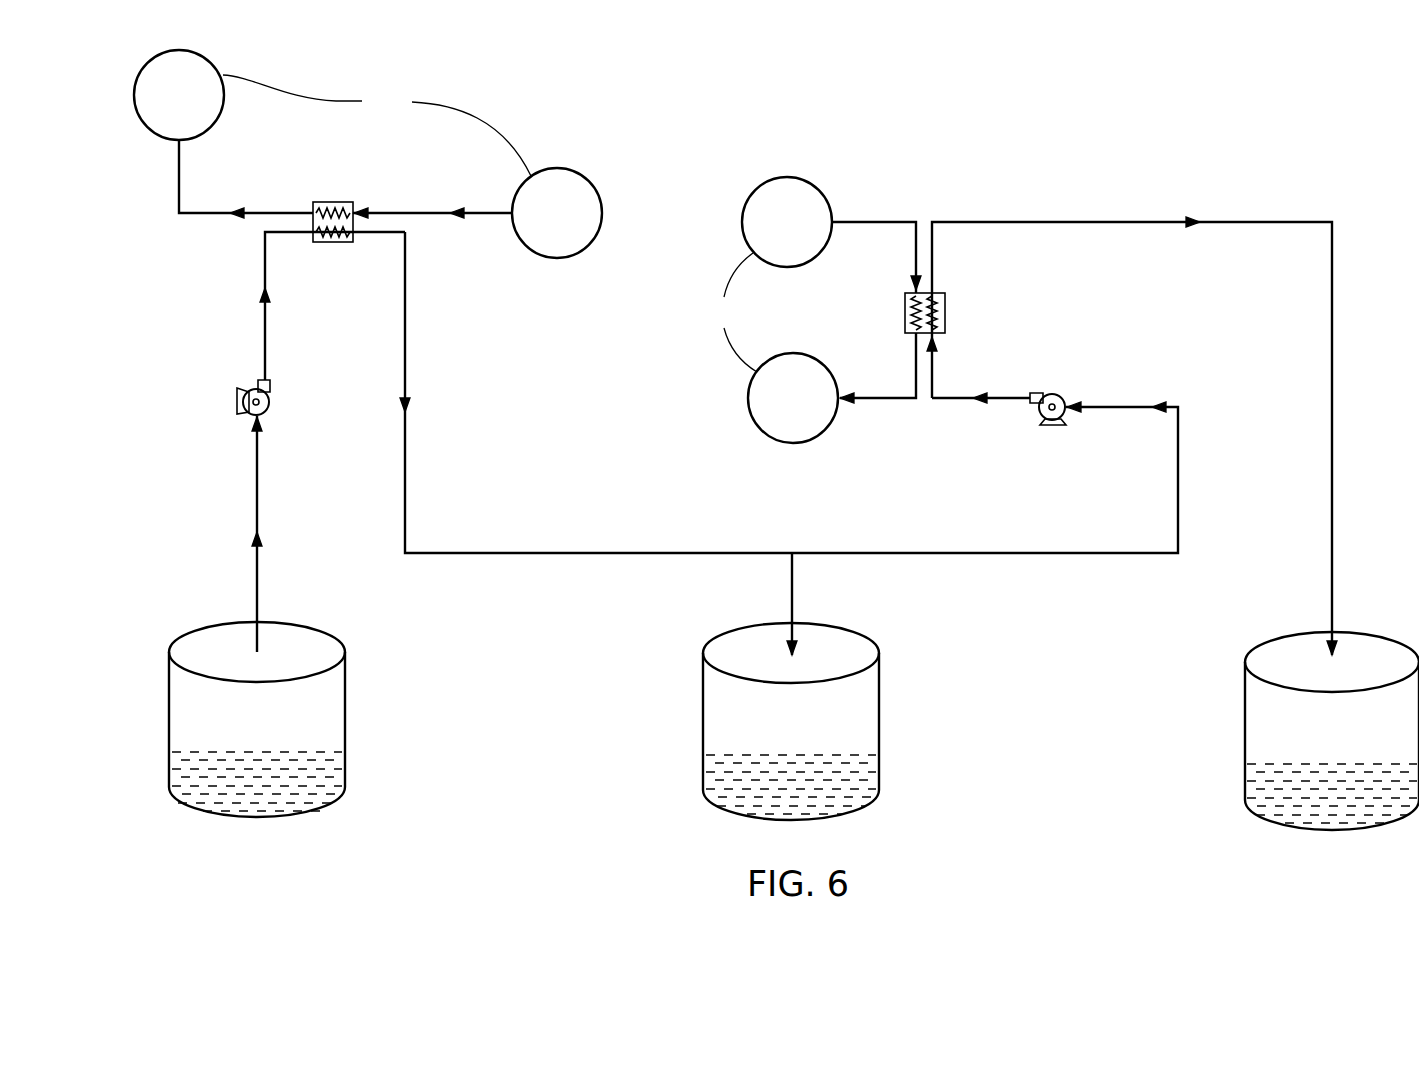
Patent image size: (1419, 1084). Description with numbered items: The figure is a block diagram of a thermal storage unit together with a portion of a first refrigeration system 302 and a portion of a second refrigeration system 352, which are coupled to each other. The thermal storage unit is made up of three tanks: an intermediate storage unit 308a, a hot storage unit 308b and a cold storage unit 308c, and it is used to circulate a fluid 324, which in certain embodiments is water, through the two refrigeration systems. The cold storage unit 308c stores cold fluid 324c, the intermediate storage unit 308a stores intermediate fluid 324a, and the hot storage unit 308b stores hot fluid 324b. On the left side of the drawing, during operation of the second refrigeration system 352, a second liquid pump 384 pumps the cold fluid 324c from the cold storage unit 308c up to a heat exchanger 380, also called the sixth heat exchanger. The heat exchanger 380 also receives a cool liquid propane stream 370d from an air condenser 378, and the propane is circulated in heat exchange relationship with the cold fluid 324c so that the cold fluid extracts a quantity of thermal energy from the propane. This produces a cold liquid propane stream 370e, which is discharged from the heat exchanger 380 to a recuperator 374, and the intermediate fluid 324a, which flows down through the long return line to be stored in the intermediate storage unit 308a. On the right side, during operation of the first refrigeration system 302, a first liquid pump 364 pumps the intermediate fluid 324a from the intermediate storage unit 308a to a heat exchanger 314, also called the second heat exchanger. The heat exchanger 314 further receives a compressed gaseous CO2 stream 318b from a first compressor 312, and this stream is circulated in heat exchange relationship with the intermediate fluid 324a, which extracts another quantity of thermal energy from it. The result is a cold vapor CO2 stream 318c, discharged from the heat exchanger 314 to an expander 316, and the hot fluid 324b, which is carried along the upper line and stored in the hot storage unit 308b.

The first refrigeration system 302 is at (729, 312).
The intermediate storage unit 308a is at (807, 664).
The hot storage unit 308b is at (1346, 672).
The cold storage unit 308c is at (246, 662).
The first compressor 312 is at (769, 234).
The heat exchanger 314 is at (905, 323).
The expander 316 is at (775, 410).
The compressed gaseous CO2 stream 318b is at (912, 287).
The cold vapor CO2 stream 318c is at (846, 407).
The fluid 324 is at (183, 805).
The intermediate fluid 324a is at (403, 404).
The hot fluid 324b is at (1189, 221).
The cold fluid 324c is at (262, 302).
The second refrigeration system 352 is at (377, 125).
The first liquid pump 364 is at (1055, 395).
The cool liquid propane stream 370d is at (457, 207).
The cold liquid propane stream 370e is at (236, 207).
The recuperator 374 is at (161, 107).
The air condenser 378 is at (539, 225).
The heat exchanger 380 is at (333, 200).
The second liquid pump 384 is at (236, 400).